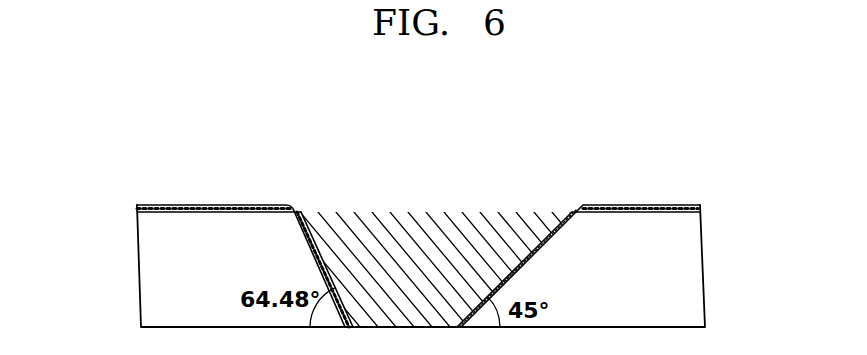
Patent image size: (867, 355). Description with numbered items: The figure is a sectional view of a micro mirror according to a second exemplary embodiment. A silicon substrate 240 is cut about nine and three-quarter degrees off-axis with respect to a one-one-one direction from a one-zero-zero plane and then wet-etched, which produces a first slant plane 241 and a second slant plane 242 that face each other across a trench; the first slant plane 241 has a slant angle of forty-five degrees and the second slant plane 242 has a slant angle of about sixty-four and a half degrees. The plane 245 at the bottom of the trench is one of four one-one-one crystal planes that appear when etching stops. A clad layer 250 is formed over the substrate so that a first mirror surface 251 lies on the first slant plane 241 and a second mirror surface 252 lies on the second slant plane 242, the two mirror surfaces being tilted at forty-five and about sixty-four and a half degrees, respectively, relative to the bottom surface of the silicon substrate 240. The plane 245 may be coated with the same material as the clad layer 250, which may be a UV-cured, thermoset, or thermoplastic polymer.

The silicon substrate 240 is at (675, 245).
The first slant plane 241 is at (543, 248).
The second slant plane 242 is at (303, 242).
The (111) crystal plane 245 is at (408, 232).
The clad layer 250 is at (220, 196).
The first mirror surface 251 is at (548, 232).
The second mirror surface 252 is at (303, 232).